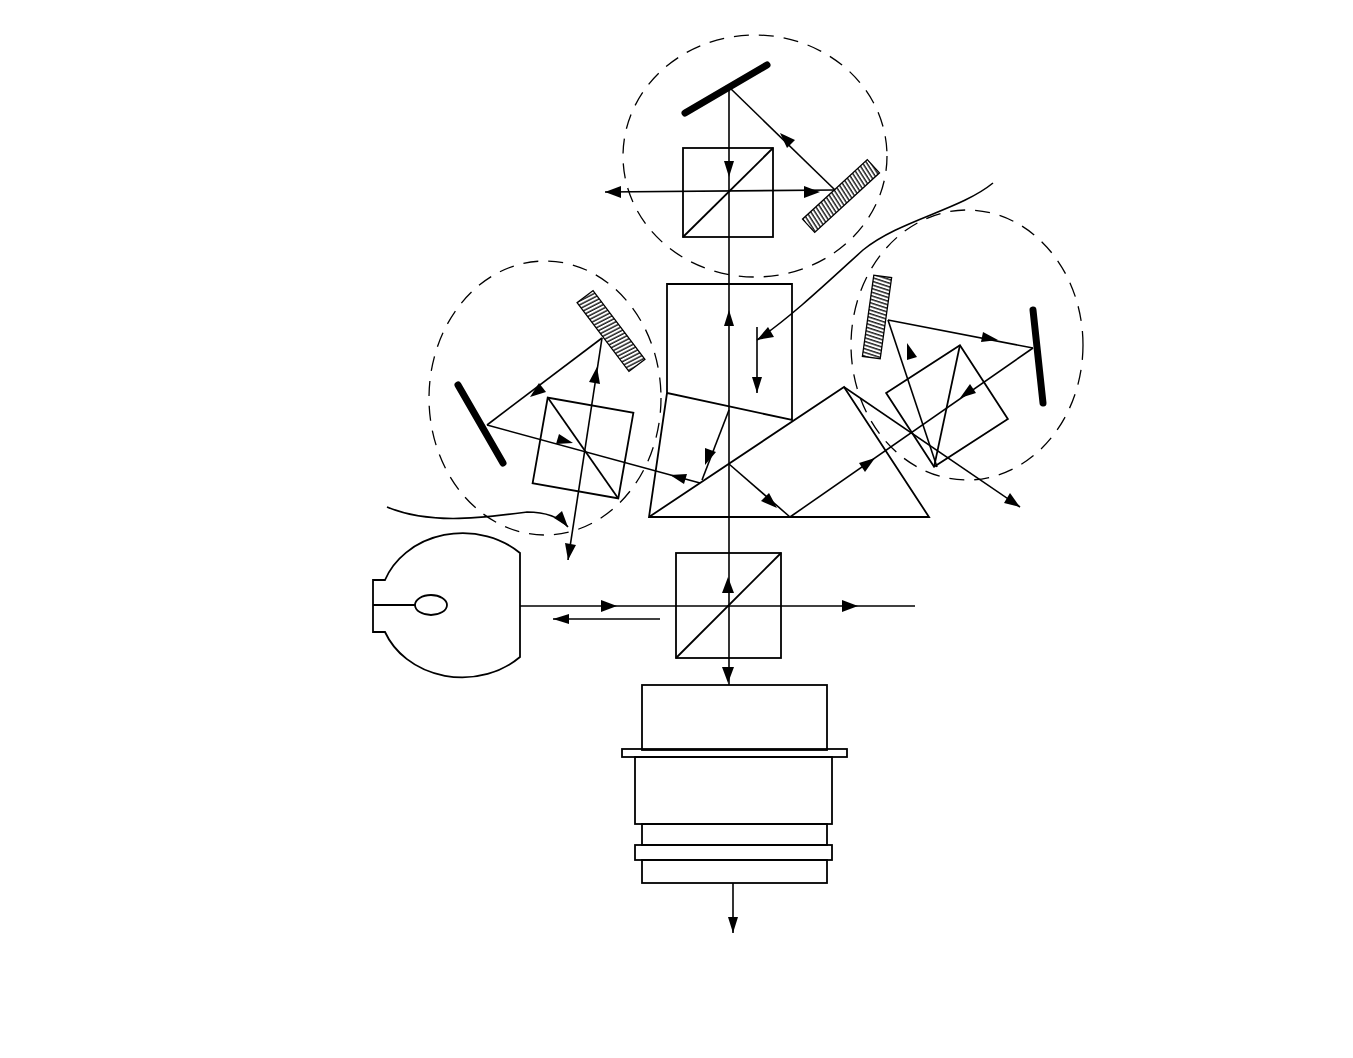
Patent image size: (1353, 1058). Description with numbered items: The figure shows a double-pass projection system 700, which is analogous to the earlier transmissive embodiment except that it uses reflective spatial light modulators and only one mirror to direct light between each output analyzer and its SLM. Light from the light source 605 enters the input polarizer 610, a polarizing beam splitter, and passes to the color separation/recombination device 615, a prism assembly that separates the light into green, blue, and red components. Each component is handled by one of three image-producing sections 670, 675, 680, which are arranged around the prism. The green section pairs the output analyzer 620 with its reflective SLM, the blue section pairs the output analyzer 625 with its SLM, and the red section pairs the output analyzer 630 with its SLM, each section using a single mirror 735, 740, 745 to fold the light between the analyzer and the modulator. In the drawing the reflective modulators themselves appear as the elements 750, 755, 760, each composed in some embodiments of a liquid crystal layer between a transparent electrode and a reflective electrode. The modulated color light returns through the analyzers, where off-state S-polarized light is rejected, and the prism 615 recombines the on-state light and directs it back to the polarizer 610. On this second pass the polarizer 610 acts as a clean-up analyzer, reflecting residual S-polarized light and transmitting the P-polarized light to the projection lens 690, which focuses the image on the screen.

The light source 605 is at (413, 660).
The input polarizer 610 is at (676, 588).
The color separation/recombination device 615 is at (840, 518).
The output analyzer 620 is at (683, 153).
The output analyzer 625 is at (527, 487).
The output analyzer 630 is at (1012, 418).
The image-producing section 670 is at (628, 128).
The image-producing section 675 is at (453, 313).
The image-producing section 680 is at (1060, 432).
The projection lens 690 is at (632, 795).
The double-pass projection system 700 is at (1205, 302).
The mirror 735 is at (878, 170).
The mirror 740 is at (587, 300).
The mirror 745 is at (868, 275).
The green channel reflective light valve 750 is at (760, 80).
The blue channel reflective light valve 755 is at (455, 393).
The red channel reflective light valve 760 is at (1047, 315).